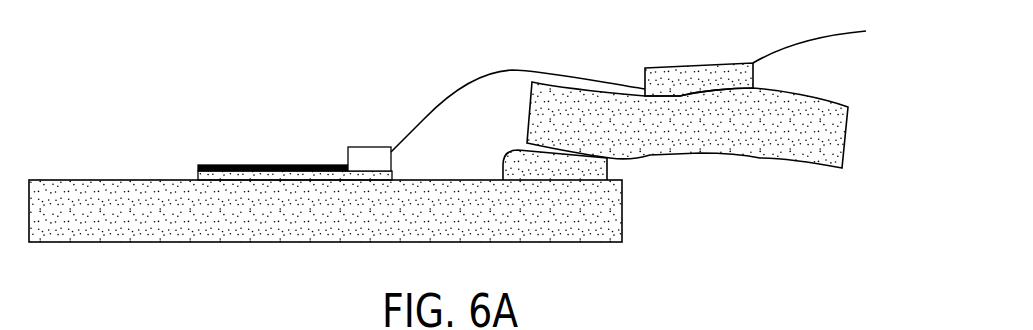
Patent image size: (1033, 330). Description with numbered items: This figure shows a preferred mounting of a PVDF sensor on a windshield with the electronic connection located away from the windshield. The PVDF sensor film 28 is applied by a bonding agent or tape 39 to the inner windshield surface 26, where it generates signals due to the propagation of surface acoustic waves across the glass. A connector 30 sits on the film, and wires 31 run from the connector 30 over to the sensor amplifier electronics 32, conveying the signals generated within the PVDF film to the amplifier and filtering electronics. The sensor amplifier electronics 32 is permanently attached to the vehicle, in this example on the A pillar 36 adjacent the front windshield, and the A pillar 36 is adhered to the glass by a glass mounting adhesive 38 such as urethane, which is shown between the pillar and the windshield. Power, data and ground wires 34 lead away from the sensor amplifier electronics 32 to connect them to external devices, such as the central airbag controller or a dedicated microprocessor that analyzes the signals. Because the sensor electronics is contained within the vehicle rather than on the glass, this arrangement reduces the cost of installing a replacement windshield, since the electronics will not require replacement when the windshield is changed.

The inner windshield surface 26 is at (82, 198).
The sensor film 28 is at (250, 163).
The connector 30 is at (360, 146).
The wires 31 is at (513, 69).
The sensor amplifier electronics 32 is at (668, 70).
The power/data/ground wires 34 is at (755, 62).
The A pillar 36 is at (717, 140).
The glass mounting adhesive 38 is at (587, 165).
The bonding agent or tape 39 is at (199, 178).